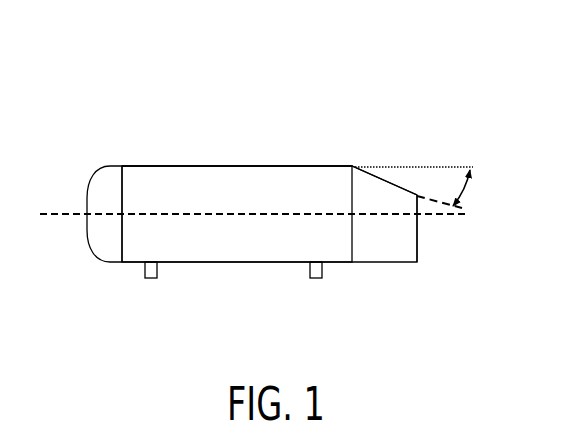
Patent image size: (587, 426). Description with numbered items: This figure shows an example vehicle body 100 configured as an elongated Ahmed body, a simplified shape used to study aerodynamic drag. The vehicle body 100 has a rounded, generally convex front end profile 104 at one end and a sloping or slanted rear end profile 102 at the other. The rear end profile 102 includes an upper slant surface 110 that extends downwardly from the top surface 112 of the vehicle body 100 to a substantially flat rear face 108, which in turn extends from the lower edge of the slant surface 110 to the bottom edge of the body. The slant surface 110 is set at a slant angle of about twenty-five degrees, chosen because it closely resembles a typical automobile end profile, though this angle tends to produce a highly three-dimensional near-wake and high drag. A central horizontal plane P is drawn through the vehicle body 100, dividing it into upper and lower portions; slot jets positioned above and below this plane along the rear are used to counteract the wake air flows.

The vehicle body 100 is at (128, 74).
The rear end profile 102 is at (287, 178).
The front end profile 104 is at (88, 203).
The rear face 108 is at (418, 240).
The slant surface 110 is at (402, 187).
The top surface 112 is at (166, 166).
The central horizontal plane P is at (69, 215).